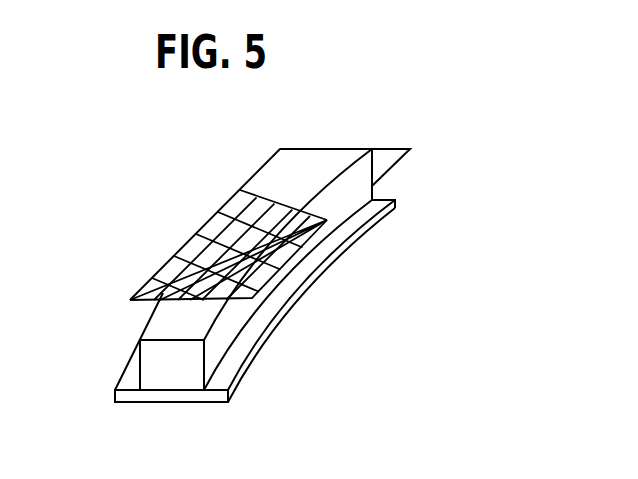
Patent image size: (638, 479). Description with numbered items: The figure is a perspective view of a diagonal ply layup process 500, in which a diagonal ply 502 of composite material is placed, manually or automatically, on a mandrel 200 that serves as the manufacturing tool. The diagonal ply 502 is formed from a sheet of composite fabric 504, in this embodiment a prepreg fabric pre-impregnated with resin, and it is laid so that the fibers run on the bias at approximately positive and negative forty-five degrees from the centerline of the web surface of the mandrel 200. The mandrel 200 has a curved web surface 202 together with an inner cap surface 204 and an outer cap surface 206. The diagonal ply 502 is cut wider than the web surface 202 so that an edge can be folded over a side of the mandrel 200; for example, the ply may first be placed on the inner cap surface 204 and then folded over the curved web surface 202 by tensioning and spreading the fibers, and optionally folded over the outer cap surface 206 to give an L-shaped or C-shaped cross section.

The mandrel 200 is at (398, 205).
The web surface 202 is at (155, 327).
The inner cap surface 204 is at (223, 340).
The outer cap surface 206 is at (138, 372).
The diagonal ply layup process 500 is at (446, 254).
The diagonal ply 502 is at (200, 232).
The composite fabric 504 is at (273, 157).